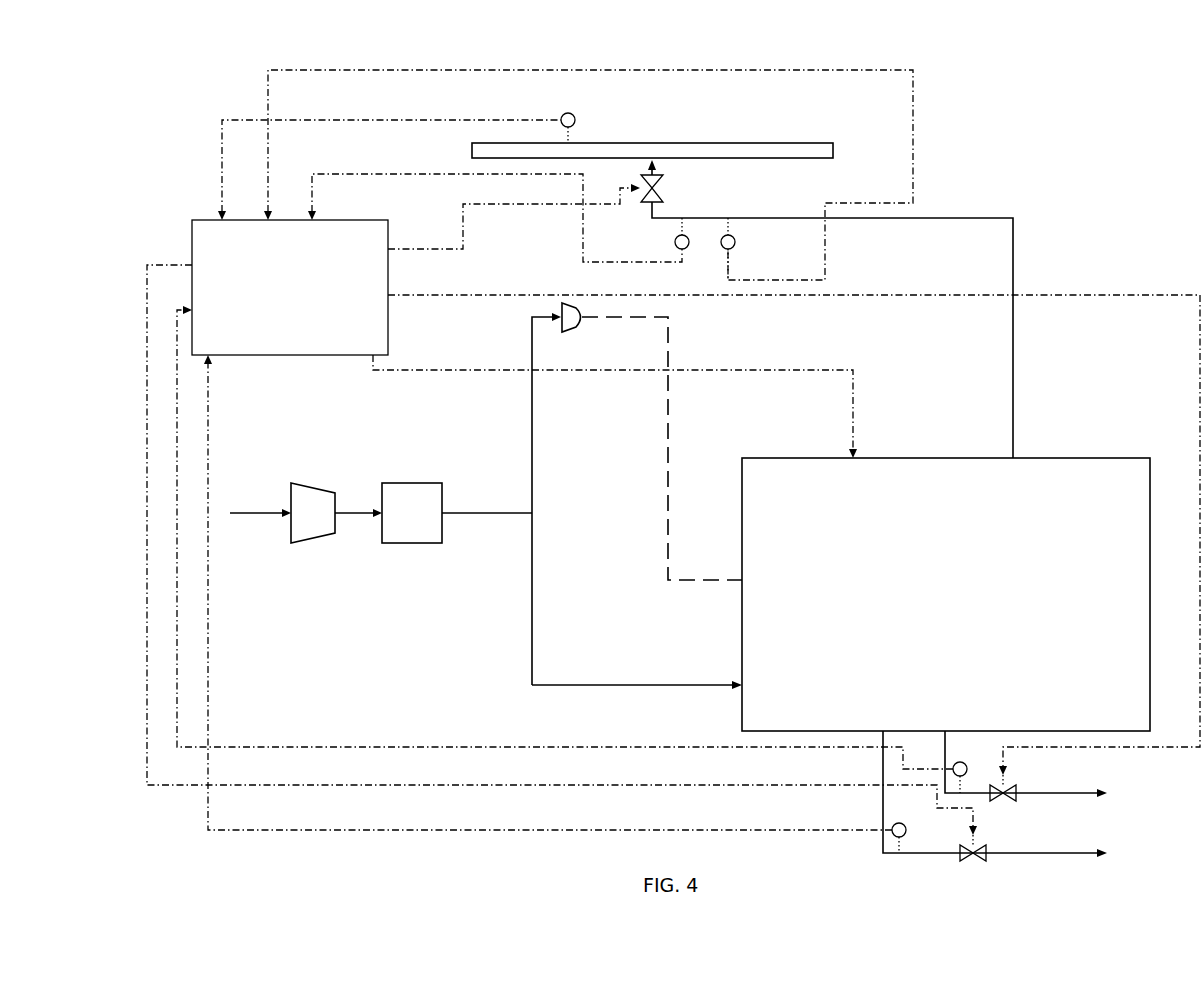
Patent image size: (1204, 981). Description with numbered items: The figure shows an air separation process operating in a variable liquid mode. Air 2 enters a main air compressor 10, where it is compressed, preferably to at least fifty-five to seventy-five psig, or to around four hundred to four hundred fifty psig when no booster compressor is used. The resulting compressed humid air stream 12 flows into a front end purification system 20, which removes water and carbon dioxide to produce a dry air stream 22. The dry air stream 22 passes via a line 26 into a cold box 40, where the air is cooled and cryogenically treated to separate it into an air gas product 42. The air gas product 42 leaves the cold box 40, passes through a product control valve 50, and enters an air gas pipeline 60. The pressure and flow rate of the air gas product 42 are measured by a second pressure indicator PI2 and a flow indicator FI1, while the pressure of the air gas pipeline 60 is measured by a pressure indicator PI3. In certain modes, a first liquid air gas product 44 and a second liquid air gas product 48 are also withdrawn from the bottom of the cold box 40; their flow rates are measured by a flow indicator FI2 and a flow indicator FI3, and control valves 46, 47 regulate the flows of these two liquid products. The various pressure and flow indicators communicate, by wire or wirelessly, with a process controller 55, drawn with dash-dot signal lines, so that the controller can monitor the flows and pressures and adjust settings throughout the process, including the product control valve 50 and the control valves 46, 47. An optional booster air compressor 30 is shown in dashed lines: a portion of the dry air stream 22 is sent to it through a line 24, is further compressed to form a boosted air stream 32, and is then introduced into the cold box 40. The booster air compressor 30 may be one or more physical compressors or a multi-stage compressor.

The air 2 is at (276, 511).
The main air compressor 10 is at (313, 513).
The compressed humid air stream 12 is at (364, 510).
The front end purification system 20 is at (412, 513).
The dry air stream 22 is at (502, 511).
The line 24 is at (531, 409).
The line 26 is at (601, 684).
The booster air compressor 30 is at (572, 331).
The boosted air stream 32 is at (669, 447).
The cold box 40 is at (946, 594).
The air gas product 42 is at (1014, 353).
The first liquid air gas product 44 is at (1040, 852).
The control valve 46 is at (978, 841).
The control valve 47 is at (1006, 779).
The second liquid air gas product 48 is at (1050, 791).
The product control valve 50 is at (655, 190).
The process controller 55 is at (290, 287).
The air gas pipeline 60 is at (829, 143).
The pressure indicator PI3 is at (576, 120).
The second pressure indicator PI2 is at (675, 244).
The flow indicator FI1 is at (735, 244).
The flow indicator FI3 is at (955, 763).
The flow indicator FI2 is at (893, 824).